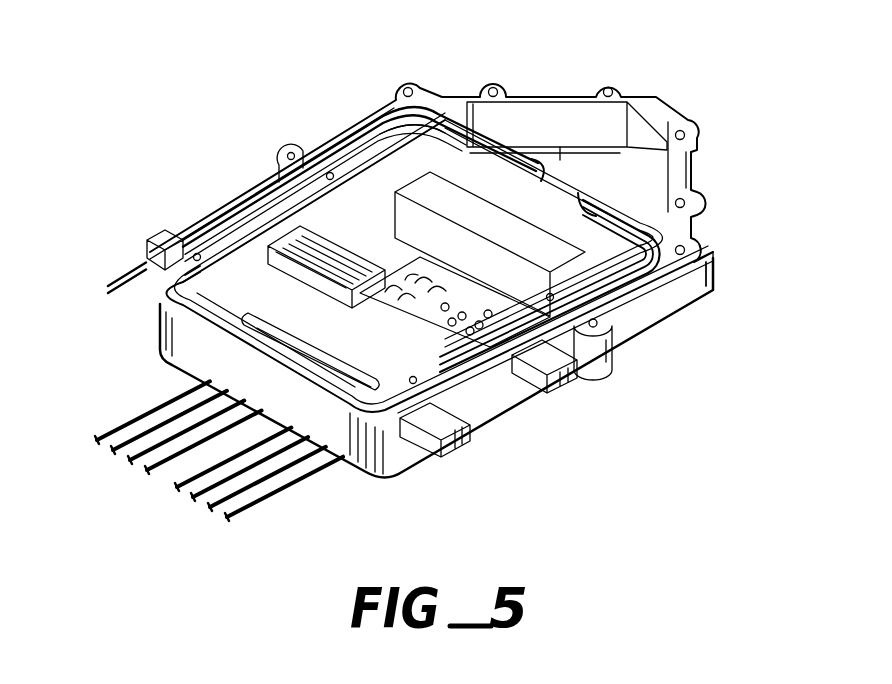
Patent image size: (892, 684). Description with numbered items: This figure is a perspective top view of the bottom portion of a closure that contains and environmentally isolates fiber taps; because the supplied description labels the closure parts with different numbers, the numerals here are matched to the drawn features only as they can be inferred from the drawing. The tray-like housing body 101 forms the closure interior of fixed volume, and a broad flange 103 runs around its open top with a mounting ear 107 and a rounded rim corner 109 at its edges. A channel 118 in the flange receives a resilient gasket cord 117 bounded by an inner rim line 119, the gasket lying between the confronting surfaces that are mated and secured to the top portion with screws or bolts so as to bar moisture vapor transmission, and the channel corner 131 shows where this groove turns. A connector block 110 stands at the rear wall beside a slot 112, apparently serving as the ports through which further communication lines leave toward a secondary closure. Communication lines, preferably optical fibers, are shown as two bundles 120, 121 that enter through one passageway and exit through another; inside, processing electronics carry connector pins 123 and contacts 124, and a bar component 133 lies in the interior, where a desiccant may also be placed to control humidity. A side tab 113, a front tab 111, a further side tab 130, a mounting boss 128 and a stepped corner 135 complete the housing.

The housing body 101 is at (404, 478).
The flange / top plate 103 is at (372, 203).
The mounting ear 107 is at (676, 122).
The rim groove corner 109 is at (180, 290).
The connector block 110 is at (538, 97).
The front tab 111 is at (424, 452).
The slot 112 is at (580, 180).
The side tab 113 is at (136, 258).
The gasket cord 117 is at (196, 228).
The gasket channel 118 is at (218, 222).
The inner rim line 119 is at (240, 222).
The ribbon wires 120 is at (293, 481).
The ribbon wires 121 is at (157, 422).
The connector pins 123 is at (473, 302).
The connector contacts 124 is at (422, 270).
The mounting boss 128 is at (612, 312).
The side tab 130 is at (567, 382).
The channel corner 131 is at (302, 148).
The bar component 133 is at (318, 358).
The stepped corner 135 is at (690, 282).